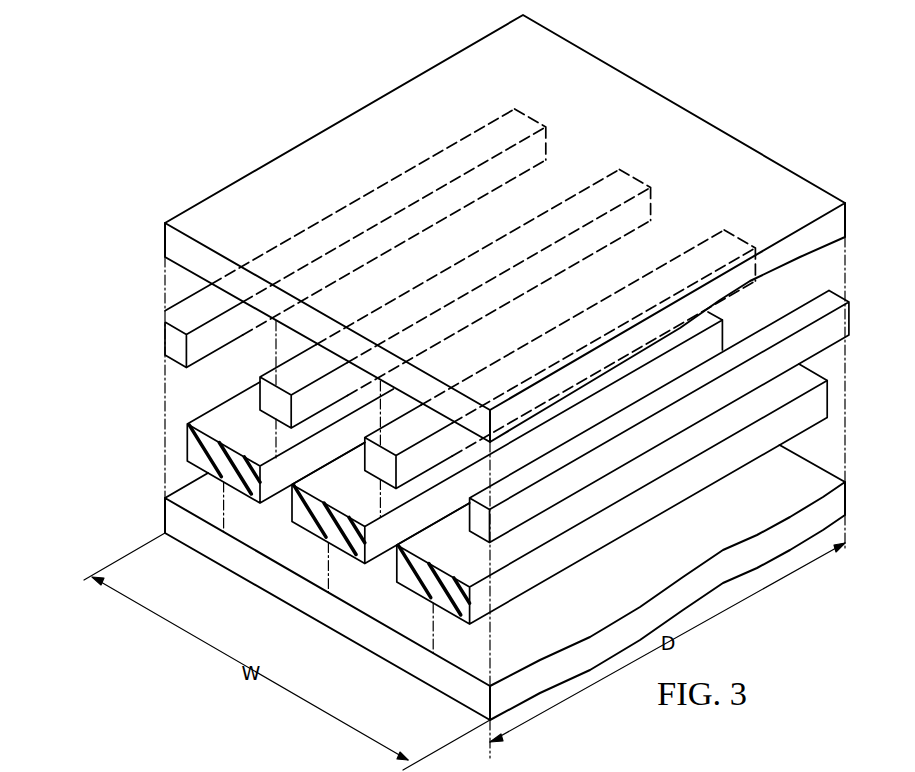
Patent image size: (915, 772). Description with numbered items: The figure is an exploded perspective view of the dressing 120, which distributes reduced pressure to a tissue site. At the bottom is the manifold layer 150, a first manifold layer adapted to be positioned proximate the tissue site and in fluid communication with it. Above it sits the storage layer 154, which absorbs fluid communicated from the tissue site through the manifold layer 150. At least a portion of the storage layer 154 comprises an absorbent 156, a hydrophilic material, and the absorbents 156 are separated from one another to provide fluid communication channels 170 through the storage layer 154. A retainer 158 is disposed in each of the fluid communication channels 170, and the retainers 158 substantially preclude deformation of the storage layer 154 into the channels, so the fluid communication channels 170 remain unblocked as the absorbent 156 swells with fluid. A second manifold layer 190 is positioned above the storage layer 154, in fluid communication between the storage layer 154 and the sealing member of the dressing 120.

The dressing 120 is at (466, 367).
The second manifold layer 190 is at (291, 162).
The storage layer 154 is at (435, 385).
The retainer 158 is at (164, 338).
The absorbent 156 is at (196, 438).
The fluid communication channel 170 is at (284, 497).
The manifold layer 150 is at (838, 500).